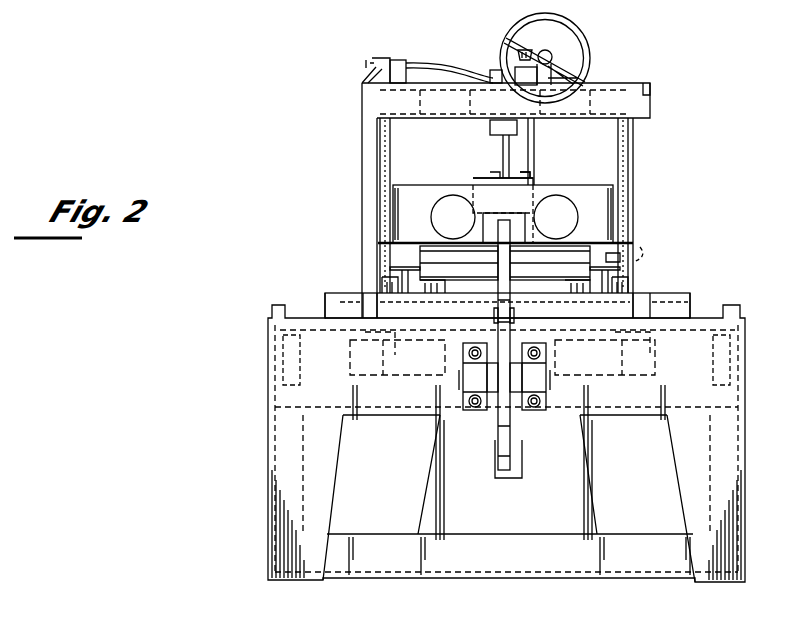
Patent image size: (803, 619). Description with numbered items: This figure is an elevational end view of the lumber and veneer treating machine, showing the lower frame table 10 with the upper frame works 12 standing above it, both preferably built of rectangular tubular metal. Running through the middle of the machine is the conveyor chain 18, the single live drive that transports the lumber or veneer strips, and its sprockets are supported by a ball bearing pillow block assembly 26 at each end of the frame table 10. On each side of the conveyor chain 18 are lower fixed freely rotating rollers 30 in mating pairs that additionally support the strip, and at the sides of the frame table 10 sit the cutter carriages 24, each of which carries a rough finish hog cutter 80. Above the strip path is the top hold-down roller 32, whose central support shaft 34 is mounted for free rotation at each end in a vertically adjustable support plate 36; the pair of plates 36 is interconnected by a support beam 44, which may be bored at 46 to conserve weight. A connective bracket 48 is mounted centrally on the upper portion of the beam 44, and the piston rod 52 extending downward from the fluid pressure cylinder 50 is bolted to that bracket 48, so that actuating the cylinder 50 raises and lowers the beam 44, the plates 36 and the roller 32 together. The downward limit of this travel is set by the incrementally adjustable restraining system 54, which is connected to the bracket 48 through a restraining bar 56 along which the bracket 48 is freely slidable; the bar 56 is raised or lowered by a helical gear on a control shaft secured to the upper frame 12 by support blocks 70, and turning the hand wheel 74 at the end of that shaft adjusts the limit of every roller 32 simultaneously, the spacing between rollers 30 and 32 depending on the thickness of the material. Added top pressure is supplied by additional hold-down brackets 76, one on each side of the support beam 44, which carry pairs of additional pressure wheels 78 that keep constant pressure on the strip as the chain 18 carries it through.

The lower frame table 10 is at (290, 474).
The upper frame works 12 is at (362, 100).
The conveyor chain 18 is at (510, 440).
The cutter carriage 24 is at (360, 355).
The ball bearing pillow block assembly 26 is at (527, 392).
The lower fixed freely rotating roller 30 is at (345, 300).
The top hold-down roller 32 is at (620, 256).
The central support shaft 34 is at (405, 260).
The vertically adjustable support plate 36 is at (388, 167).
The support beam 44 is at (444, 195).
The bore 46 is at (436, 215).
The connective bracket 48 is at (533, 183).
The fluid pressure cylinder 50 is at (497, 127).
The piston rod 52 is at (503, 153).
The incrementally adjustable restraining system 54 is at (500, 50).
The restraining bar 56 is at (530, 146).
The support block 70 is at (584, 80).
The hand wheel 74 is at (585, 50).
The additional hold-down bracket 76 is at (492, 259).
The additional pressure wheel 78 is at (520, 267).
The rough finish hog cutter 80 is at (385, 283).